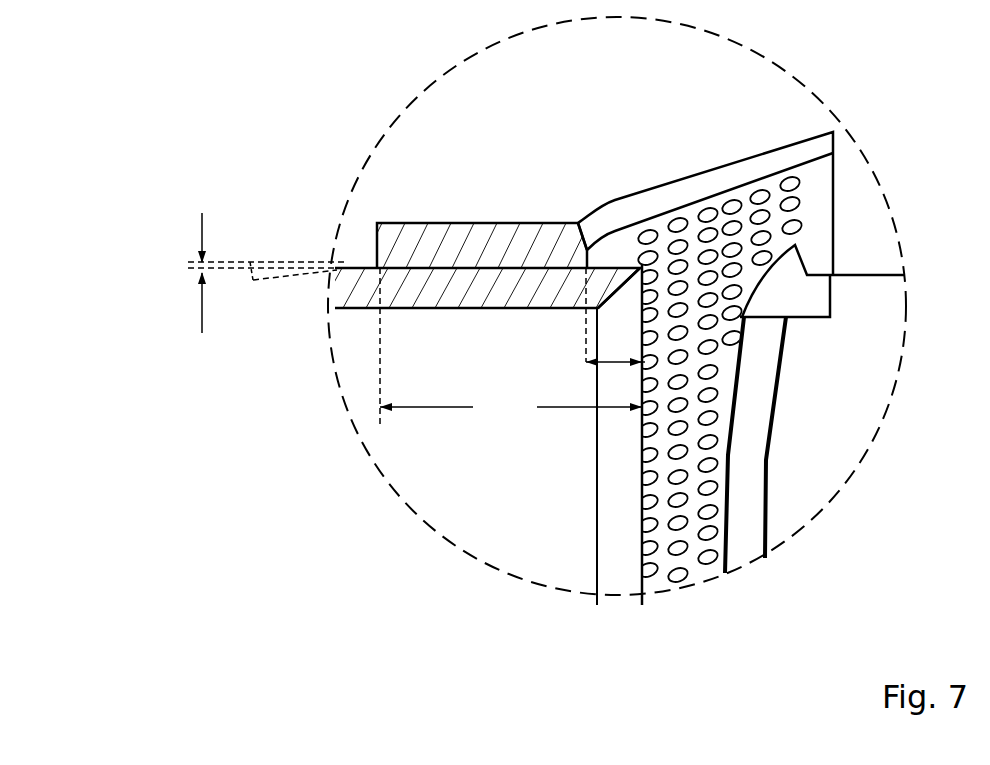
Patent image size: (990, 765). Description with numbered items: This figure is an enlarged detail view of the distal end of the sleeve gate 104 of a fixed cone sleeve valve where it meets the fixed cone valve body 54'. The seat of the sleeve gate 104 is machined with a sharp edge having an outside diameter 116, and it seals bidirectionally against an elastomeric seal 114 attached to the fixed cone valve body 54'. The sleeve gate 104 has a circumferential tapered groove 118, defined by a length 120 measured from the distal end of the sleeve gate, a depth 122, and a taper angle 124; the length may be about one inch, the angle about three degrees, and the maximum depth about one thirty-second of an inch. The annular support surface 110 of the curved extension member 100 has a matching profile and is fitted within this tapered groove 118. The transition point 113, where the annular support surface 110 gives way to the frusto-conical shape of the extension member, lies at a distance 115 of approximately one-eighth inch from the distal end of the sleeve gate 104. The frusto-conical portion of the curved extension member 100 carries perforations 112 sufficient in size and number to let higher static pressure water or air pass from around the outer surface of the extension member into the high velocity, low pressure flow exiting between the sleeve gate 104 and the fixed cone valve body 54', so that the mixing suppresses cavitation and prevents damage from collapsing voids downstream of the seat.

The curved extension member 100 is at (670, 185).
The sleeve gate 104 is at (527, 308).
The annular support surface 110 is at (446, 223).
The perforations 112 is at (763, 211).
The transition point 113 is at (578, 222).
The elastomeric seal 114 is at (822, 281).
The distance 115 is at (608, 362).
The outside diameter 116 is at (640, 256).
The tapered groove 118 is at (383, 268).
The length 120 is at (511, 347).
The depth 122 is at (264, 286).
The angle 124 is at (244, 277).
The fixed cone valve body 54' is at (786, 445).